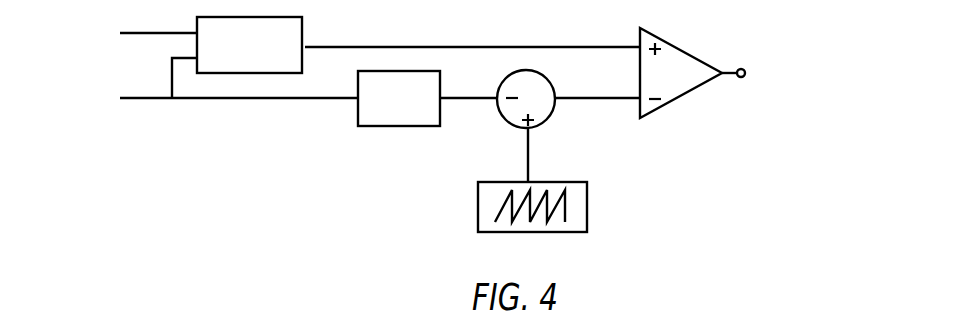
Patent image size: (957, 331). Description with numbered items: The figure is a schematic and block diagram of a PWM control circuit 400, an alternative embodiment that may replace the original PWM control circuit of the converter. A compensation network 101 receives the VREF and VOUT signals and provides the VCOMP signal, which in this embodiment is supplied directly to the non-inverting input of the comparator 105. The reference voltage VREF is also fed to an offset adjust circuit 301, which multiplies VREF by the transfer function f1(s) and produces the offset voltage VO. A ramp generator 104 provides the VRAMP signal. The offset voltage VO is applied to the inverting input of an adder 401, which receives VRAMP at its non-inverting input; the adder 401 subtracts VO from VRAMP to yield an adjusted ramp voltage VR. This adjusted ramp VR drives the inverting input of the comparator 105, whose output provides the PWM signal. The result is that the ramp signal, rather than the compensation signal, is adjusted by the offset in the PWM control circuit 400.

The compensation network 101 is at (268, 56).
The offset adjust circuit 301 is at (401, 126).
The adder 401 is at (548, 117).
The comparator 105 is at (683, 81).
The ramp generator 104 is at (587, 205).
The PWM control circuit 400 is at (463, 121).